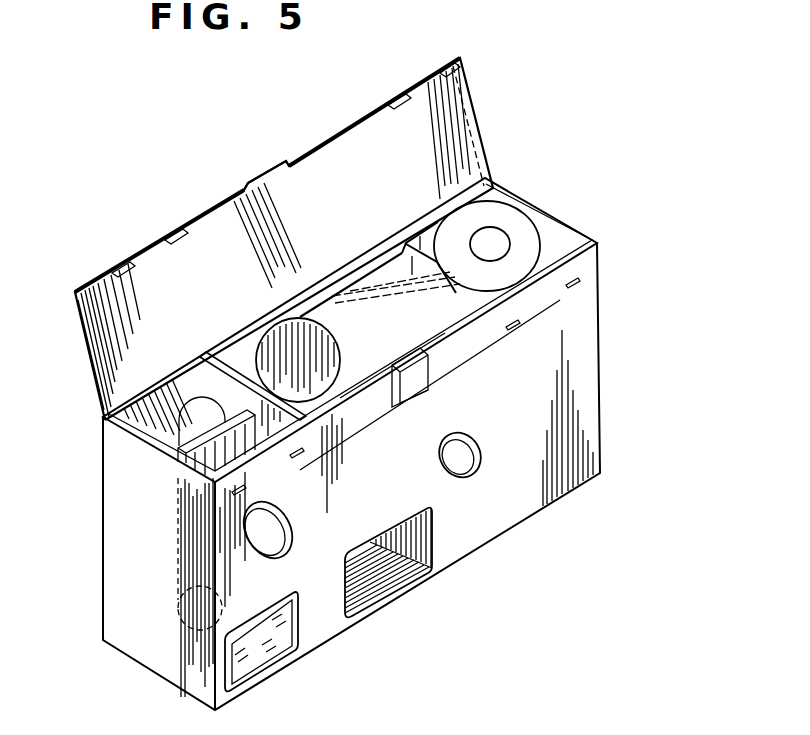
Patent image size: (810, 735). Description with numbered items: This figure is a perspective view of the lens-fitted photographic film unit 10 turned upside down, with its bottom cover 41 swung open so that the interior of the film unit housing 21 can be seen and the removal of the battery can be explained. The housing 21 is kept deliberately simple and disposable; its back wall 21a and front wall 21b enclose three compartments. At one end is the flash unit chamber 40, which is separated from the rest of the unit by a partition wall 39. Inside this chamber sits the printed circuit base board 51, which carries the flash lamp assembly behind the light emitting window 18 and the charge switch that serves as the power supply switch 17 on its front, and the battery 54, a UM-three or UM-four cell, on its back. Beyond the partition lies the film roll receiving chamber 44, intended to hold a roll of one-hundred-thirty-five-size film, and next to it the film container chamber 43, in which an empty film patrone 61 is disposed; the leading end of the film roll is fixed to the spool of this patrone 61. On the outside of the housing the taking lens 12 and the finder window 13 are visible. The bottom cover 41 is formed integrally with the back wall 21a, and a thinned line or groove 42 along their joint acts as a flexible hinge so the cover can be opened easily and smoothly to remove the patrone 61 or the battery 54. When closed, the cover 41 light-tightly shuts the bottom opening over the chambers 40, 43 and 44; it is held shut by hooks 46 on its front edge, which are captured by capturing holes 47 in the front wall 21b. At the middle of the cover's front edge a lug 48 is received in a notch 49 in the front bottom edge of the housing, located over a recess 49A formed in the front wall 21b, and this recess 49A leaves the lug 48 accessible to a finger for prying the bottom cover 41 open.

The lens-fitted photographic film unit 10 is at (194, 186).
The taking lens 12 is at (468, 468).
The finder window 13 is at (385, 595).
The power supply switch 17 is at (272, 535).
The light emitting window 18 is at (262, 652).
The film unit housing 21 is at (598, 330).
The back wall 21a is at (103, 513).
The front wall 21b is at (594, 410).
The partition wall 39 is at (305, 420).
The flash unit chamber 40 is at (155, 420).
The bottom cover 41 is at (470, 130).
The groove 42 is at (135, 392).
The film container chamber 43 is at (415, 250).
The film roll receiving chamber 44 is at (278, 350).
The hooks 46 is at (172, 238).
The capturing holes 47 is at (298, 458).
The lug 48 is at (265, 168).
The notch 49 is at (422, 368).
The recess 49A is at (400, 408).
The printed circuit base board 51 is at (218, 450).
The battery 54 is at (192, 418).
The film patrone 61 is at (522, 232).